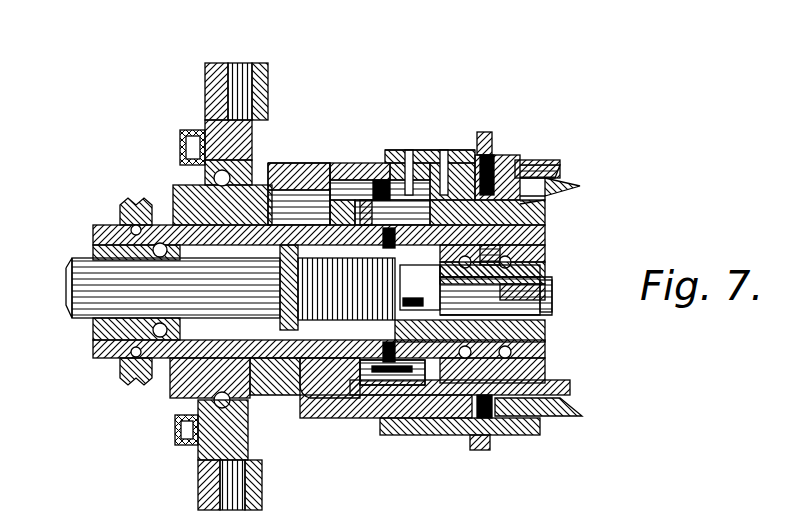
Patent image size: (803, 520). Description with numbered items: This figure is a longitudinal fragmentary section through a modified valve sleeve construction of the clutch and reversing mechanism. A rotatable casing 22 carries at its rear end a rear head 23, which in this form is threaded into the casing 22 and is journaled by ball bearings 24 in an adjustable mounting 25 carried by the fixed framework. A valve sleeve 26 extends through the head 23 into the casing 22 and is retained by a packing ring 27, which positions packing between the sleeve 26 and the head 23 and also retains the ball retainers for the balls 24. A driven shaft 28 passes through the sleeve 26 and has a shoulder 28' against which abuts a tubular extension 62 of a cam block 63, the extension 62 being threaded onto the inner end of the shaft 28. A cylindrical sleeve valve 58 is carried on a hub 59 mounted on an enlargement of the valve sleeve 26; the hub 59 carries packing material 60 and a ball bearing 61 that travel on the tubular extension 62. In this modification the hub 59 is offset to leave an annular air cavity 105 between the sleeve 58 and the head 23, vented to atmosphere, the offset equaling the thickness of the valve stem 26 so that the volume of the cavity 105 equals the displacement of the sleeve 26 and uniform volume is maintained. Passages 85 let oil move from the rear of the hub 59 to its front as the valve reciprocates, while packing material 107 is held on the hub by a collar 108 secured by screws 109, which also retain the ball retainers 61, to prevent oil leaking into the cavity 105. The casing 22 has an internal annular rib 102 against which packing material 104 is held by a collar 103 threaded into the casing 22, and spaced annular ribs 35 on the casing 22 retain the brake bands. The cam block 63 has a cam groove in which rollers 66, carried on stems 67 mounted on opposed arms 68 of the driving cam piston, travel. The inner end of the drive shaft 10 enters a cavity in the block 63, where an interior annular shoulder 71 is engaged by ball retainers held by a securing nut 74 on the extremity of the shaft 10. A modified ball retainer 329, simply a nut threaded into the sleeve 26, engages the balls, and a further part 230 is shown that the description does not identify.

The drive shaft 10 is at (548, 272).
The casing 22 is at (520, 165).
The rear head 23 is at (255, 178).
The ball bearings 24 is at (205, 166).
The mounting 25 is at (208, 100).
The valve sleeve 26 is at (300, 225).
The packing ring 27 is at (185, 398).
The driven shaft 28 is at (151, 288).
The shoulder 28' is at (311, 287).
The annular ribs 35 is at (484, 132).
The sleeve valve 58 is at (545, 200).
The hub 59 is at (405, 165).
The packing material 60 is at (370, 385).
The ball bearing 61 is at (392, 380).
The tubular extension 62 is at (305, 398).
The cam block 63 is at (548, 345).
The rollers 66 is at (545, 236).
The stems 67 is at (545, 258).
The arms 68 is at (545, 250).
The annular shoulder 71 is at (540, 300).
The securing nut 74 is at (420, 287).
The passages 85 is at (355, 219).
The internal annular rib 102 is at (560, 182).
The collar 103 is at (480, 165).
The packing material 104 is at (500, 170).
The annular air cavity 105 is at (430, 180).
The packing material 107 is at (366, 200).
The collar 108 is at (395, 175).
The screws 109 is at (410, 395).
The lock washer 230 is at (128, 205).
The ball retainer 329 is at (93, 236).